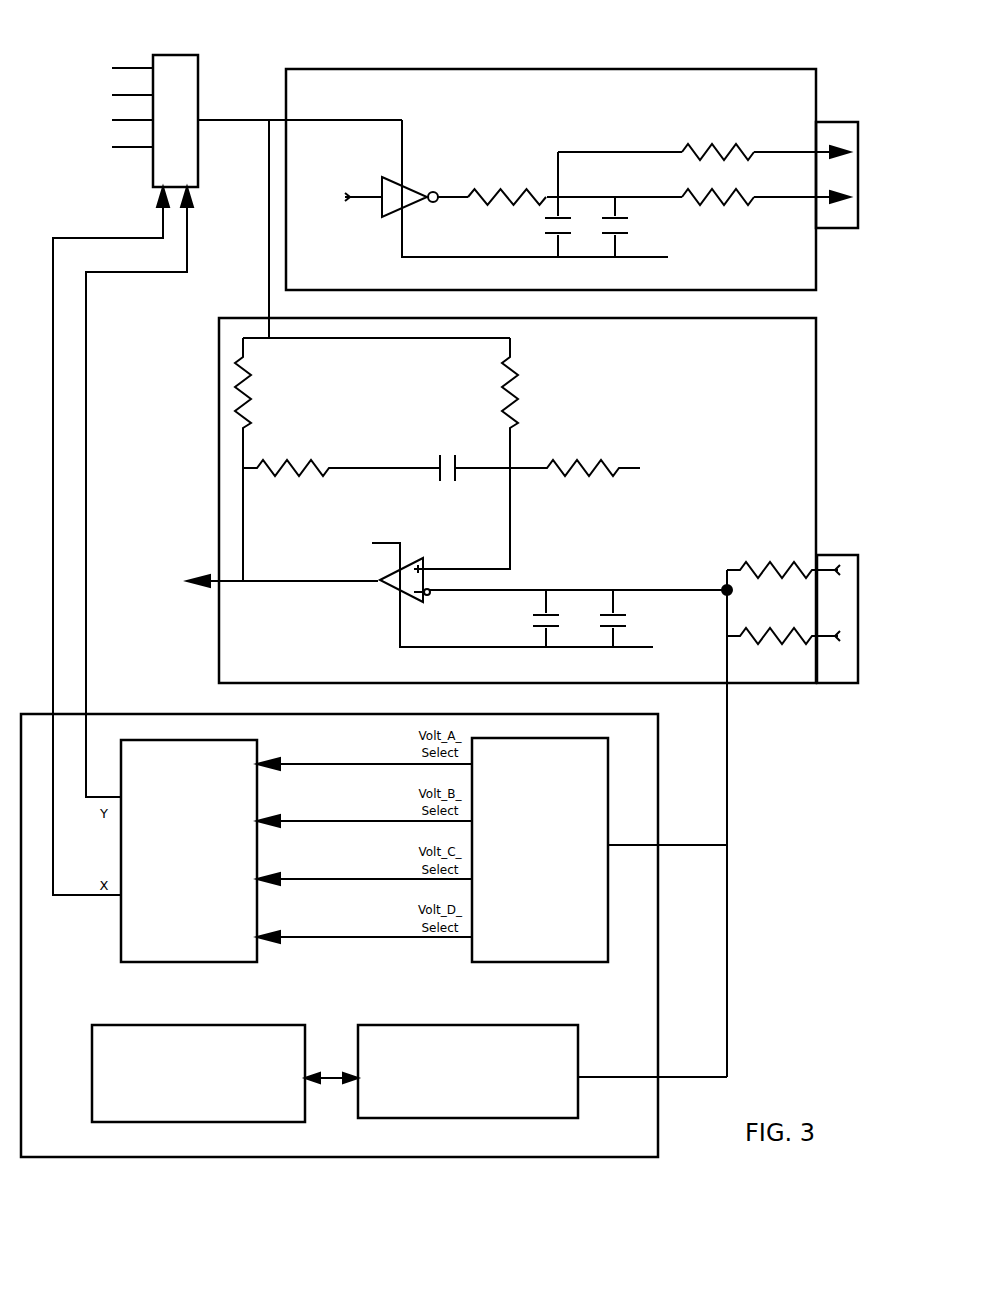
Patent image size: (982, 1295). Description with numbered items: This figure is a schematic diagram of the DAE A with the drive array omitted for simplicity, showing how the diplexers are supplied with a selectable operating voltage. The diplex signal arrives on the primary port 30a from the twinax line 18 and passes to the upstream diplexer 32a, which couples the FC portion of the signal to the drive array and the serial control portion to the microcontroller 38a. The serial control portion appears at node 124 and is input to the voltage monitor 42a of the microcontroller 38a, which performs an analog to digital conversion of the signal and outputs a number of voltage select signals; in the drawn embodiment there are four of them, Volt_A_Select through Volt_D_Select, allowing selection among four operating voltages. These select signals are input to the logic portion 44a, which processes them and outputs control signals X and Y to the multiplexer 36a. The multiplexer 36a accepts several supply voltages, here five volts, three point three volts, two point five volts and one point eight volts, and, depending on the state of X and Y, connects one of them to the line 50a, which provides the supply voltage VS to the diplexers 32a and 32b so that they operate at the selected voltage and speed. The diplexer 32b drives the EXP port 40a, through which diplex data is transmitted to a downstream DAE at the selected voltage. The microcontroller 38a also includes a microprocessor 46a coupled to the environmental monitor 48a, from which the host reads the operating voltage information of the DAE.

The multiplexer 36a is at (177, 53).
The line 50a is at (222, 120).
The diplexer 32b is at (568, 179).
The EXP port 40a is at (825, 122).
The upstream diplexer 32a is at (482, 500).
The primary port PRI 30a is at (830, 553).
The twinax line 18 is at (835, 585).
The node 124 is at (722, 590).
The microcontroller 38a is at (339, 935).
The logic portion 44a is at (189, 851).
The voltage monitor 42a is at (599, 850).
The environmental monitor 48a is at (198, 1073).
The microprocessor 46a is at (542, 1071).